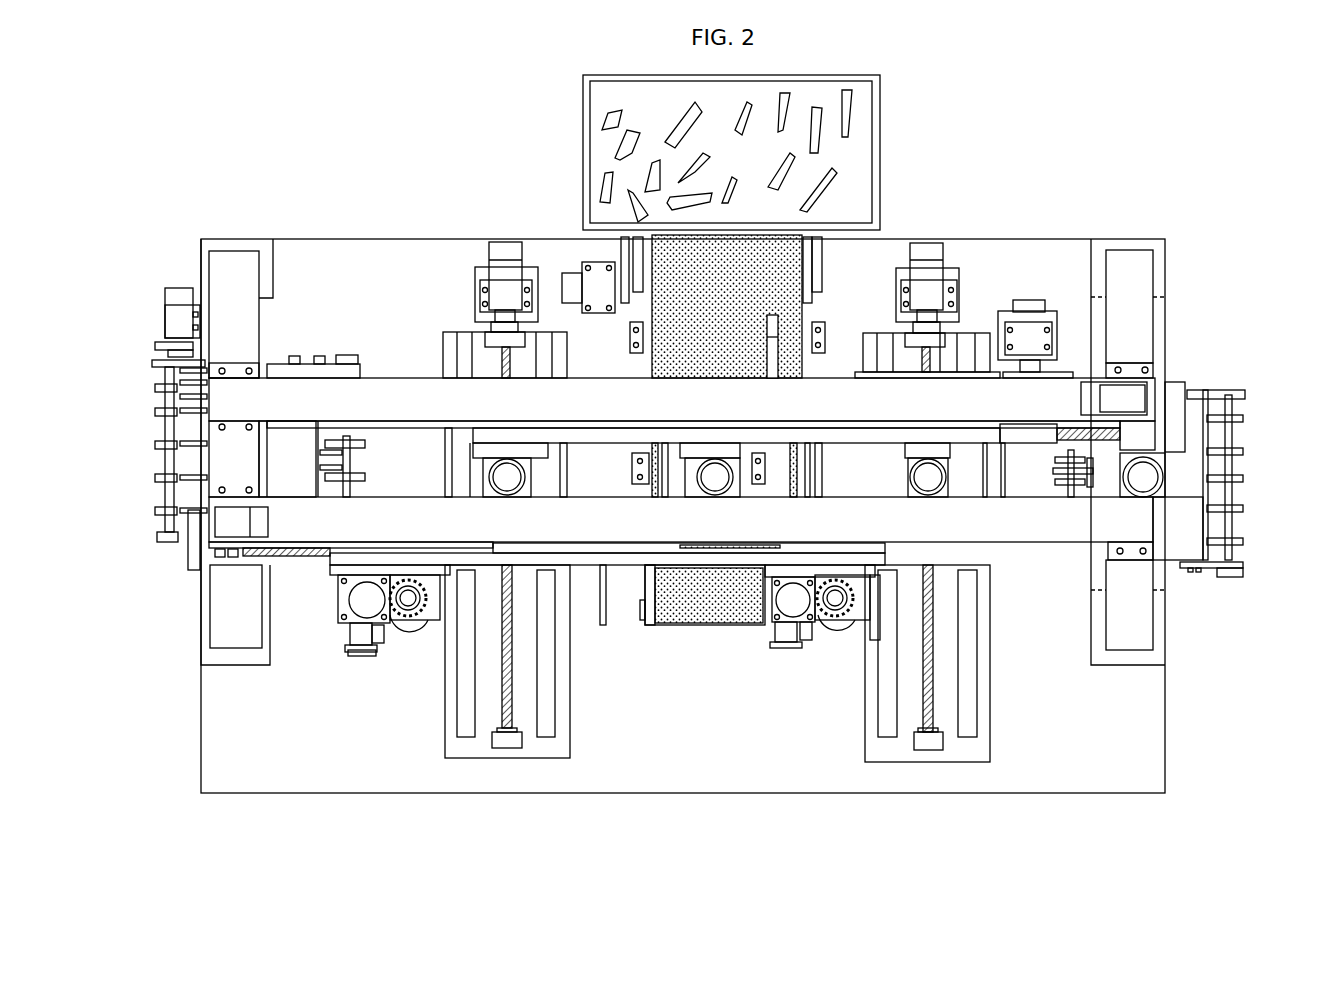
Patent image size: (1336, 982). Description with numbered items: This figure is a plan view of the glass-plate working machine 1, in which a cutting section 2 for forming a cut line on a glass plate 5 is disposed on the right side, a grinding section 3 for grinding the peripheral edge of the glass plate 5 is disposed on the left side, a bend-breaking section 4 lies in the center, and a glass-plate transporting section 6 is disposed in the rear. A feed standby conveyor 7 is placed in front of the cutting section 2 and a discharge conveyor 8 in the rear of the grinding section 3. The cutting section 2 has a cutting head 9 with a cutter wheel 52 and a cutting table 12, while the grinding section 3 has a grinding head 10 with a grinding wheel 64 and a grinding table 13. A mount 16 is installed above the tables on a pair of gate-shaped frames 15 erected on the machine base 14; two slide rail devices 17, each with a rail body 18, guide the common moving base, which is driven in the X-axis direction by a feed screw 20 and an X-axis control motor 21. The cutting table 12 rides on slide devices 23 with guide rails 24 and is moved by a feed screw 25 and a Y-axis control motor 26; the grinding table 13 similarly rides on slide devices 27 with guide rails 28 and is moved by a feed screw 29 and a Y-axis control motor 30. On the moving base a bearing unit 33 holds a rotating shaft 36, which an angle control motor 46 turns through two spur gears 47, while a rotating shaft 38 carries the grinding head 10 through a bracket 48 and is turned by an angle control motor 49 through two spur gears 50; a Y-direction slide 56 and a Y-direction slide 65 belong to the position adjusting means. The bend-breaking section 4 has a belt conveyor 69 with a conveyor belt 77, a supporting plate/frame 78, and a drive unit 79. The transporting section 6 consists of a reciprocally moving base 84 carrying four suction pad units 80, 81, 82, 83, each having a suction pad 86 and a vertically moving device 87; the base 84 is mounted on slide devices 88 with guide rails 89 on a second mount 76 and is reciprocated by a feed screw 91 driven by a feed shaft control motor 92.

The glass-plate working machine 1 is at (1075, 222).
The cutting section 2 is at (880, 600).
The grinding section 3 is at (450, 660).
The bend-breaking section 4 is at (662, 575).
The glass plate 5 is at (277, 476).
The glass-plate transporting section 6 is at (845, 435).
The feed standby conveyor 7 is at (1242, 563).
The discharge conveyor 8 is at (165, 485).
The cutting head 9 is at (815, 640).
The grinding head 10 is at (380, 645).
The cutting table 12 is at (993, 480).
The grinding table 13 is at (445, 488).
The machine base 14 is at (727, 772).
The gate-shaped frames 15 is at (227, 455).
The mount 16 is at (600, 535).
The slide rail devices 17 is at (955, 550).
The rail body 18 is at (970, 550).
The feed screw 20 is at (283, 557).
The X-axis control motor 21 is at (235, 520).
The slide devices 23 is at (445, 462).
The guide rail 24 is at (885, 700).
The feed screw 25 is at (928, 700).
The Y-axis control motor 26 is at (930, 260).
The slide devices 27 is at (545, 630).
The guide rail 28 is at (470, 650).
The feed screw 29 is at (510, 710).
The Y-axis control motor 30 is at (505, 262).
The bearing unit 33 is at (505, 570).
The rotating shaft 36 is at (835, 612).
The rotating shaft 38 is at (395, 635).
The angle control motor 46 is at (830, 600).
The spur gears 47 is at (848, 630).
The bracket 48 is at (800, 585).
The angle control motor 49 is at (360, 605).
The spur gears 50 is at (410, 620).
The cutter wheel 52 is at (345, 572).
The Y-direction slide 56 is at (800, 630).
The grinding wheel 64 is at (420, 622).
The Y-direction slide 65 is at (355, 648).
The belt conveyor 69 is at (700, 570).
The second mount 76 is at (403, 395).
The conveyor belt 77 is at (744, 308).
The supporting plate/frame 78 is at (806, 318).
The drive unit 79 is at (598, 290).
The suction pad unit 80 is at (1143, 477).
The suction pad unit 81 is at (928, 477).
The suction pad unit 82 is at (715, 477).
The suction pad unit 83 is at (507, 477).
The reciprocally moving base 84 is at (607, 436).
The suction pad 86 is at (490, 497).
The vertically moving device 87 is at (510, 480).
The slide devices 88 is at (355, 428).
The guide rails 89 is at (1020, 437).
The feed screw 91 is at (1038, 440).
The feed shaft control motor 92 is at (1128, 392).